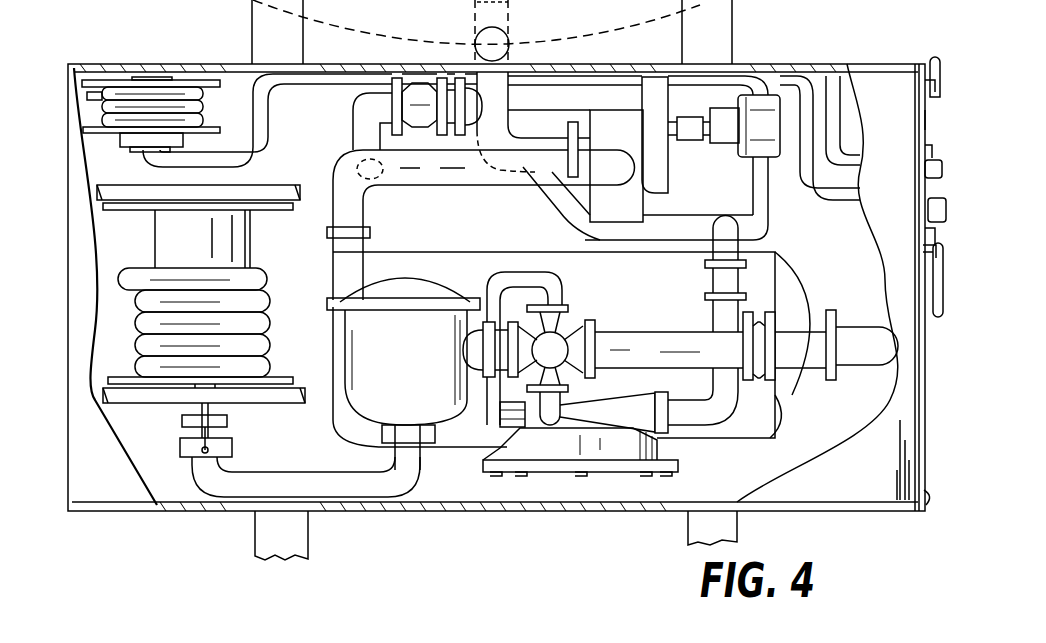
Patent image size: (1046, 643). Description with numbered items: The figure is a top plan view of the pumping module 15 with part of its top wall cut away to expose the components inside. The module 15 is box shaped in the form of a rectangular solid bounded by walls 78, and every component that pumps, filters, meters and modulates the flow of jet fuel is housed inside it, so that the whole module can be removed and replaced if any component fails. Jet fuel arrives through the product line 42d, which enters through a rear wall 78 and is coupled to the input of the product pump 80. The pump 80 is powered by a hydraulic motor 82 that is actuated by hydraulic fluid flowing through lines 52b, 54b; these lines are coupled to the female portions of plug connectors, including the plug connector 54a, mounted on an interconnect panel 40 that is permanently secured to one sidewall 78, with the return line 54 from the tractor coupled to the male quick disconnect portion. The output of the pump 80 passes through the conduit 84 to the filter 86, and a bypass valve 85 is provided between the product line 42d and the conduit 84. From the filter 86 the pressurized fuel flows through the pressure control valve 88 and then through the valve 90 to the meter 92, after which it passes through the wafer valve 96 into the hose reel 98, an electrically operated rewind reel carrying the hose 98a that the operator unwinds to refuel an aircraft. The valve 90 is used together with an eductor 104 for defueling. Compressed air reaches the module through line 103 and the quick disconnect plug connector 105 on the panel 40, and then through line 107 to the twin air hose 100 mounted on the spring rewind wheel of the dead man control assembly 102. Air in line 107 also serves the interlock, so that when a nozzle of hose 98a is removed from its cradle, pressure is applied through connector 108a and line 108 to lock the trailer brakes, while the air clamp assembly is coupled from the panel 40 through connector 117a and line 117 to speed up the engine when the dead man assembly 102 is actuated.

The pumping module 15 is at (403, 572).
The interconnect panel 40 is at (920, 120).
The product line 42d is at (538, 51).
The hydraulic line 52b is at (762, 206).
The return line 54 is at (925, 238).
The plug connector 54a is at (927, 204).
The hydraulic line 54b is at (808, 188).
The wall 78 is at (924, 500).
The product pump 80 is at (598, 114).
The hydraulic motor 82 is at (742, 106).
The conduit 84 is at (424, 188).
The bypass valve 85 is at (392, 96).
The filter 86 is at (518, 252).
The pressure control valve 88 is at (800, 386).
The valve 90 is at (578, 327).
The meter 92 is at (424, 285).
The wafer valve 96 is at (234, 444).
The hose reel 98 is at (258, 200).
The hose 98a is at (258, 268).
The twin air hose 100 is at (200, 112).
The dead man control assembly 102 is at (206, 81).
The air line 103 is at (925, 170).
The eductor 104 is at (628, 405).
The quick disconnect plug connector 105 is at (922, 150).
The air line 107 is at (261, 150).
The interlock line 108 is at (930, 66).
The connector 108a is at (923, 84).
The air clamp line 117 is at (938, 288).
The connector 117a is at (930, 252).